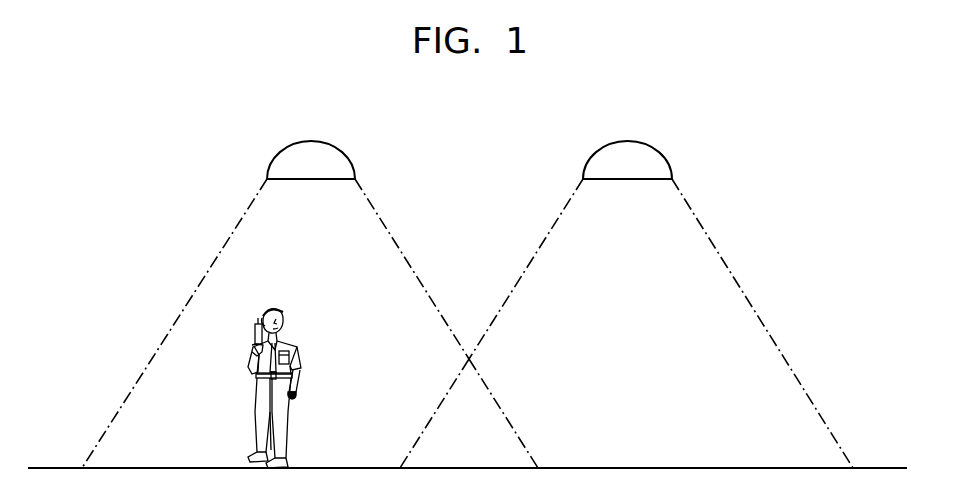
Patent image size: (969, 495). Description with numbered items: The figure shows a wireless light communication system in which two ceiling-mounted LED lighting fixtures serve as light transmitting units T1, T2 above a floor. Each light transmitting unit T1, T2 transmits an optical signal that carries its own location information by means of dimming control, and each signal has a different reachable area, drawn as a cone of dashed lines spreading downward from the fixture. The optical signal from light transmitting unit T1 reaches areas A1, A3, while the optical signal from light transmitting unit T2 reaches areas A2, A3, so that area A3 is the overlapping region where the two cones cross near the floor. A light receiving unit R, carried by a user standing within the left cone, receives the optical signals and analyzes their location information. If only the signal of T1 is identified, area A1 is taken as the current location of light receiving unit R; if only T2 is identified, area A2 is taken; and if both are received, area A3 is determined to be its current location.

The light transmitting unit T1 is at (310, 179).
The light transmitting unit T2 is at (627, 179).
The area A1 is at (275, 323).
The area A2 is at (661, 323).
The area A3 is at (469, 413).
The light receiving unit R is at (256, 331).